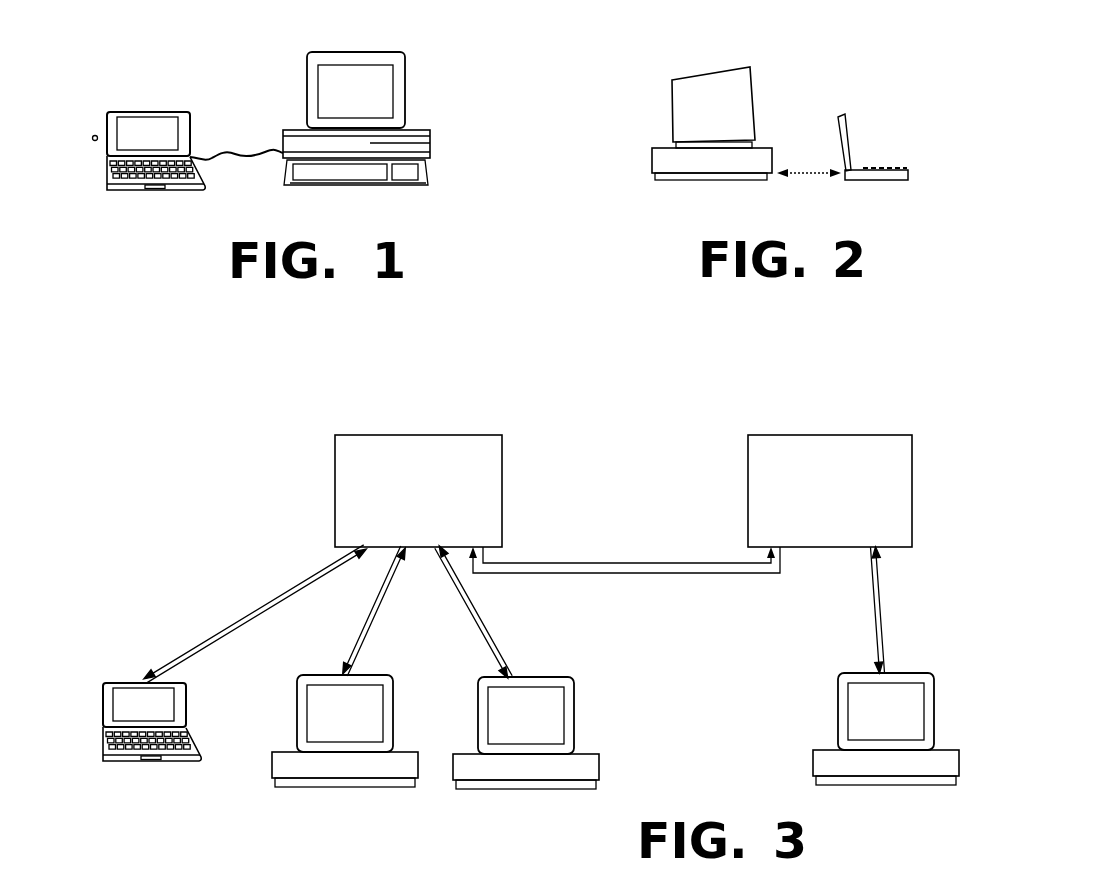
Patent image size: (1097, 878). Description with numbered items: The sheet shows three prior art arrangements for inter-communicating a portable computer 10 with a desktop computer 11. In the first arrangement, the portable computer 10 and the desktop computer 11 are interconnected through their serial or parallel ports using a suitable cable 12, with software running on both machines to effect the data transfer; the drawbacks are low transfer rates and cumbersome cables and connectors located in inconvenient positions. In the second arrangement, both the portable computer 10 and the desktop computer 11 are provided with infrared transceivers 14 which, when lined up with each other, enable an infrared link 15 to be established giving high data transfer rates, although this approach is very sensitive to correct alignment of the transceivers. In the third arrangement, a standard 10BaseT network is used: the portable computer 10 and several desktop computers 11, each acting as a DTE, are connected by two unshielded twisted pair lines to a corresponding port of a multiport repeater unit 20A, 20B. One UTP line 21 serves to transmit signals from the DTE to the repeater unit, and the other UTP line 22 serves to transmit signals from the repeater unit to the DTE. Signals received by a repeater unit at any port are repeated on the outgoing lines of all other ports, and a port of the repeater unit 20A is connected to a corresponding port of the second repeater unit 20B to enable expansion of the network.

In FIG. 1, the portable computer 10 is at (152, 112).
In FIG. 2, the portable computer 10 is at (848, 120).
In FIG. 3, the portable computer 10 is at (120, 682).
In FIG. 1, the desktop computer 11 is at (385, 52).
In FIG. 2, the desktop computer 11 is at (728, 71).
In FIG. 3, the desktop computer 11 is at (391, 692).
In FIG. 1, the cable 12 is at (237, 152).
In FIG. 2, the infrared transceivers 14 is at (772, 178).
In FIG. 2, the infrared link 15 is at (808, 170).
In FIG. 3, the multiport repeater unit 20A is at (503, 484).
In FIG. 3, the multiport repeater unit 20B is at (748, 481).
In FIG. 3, the UTP line 21 is at (389, 578).
In FIG. 3, the UTP line 22 is at (366, 626).